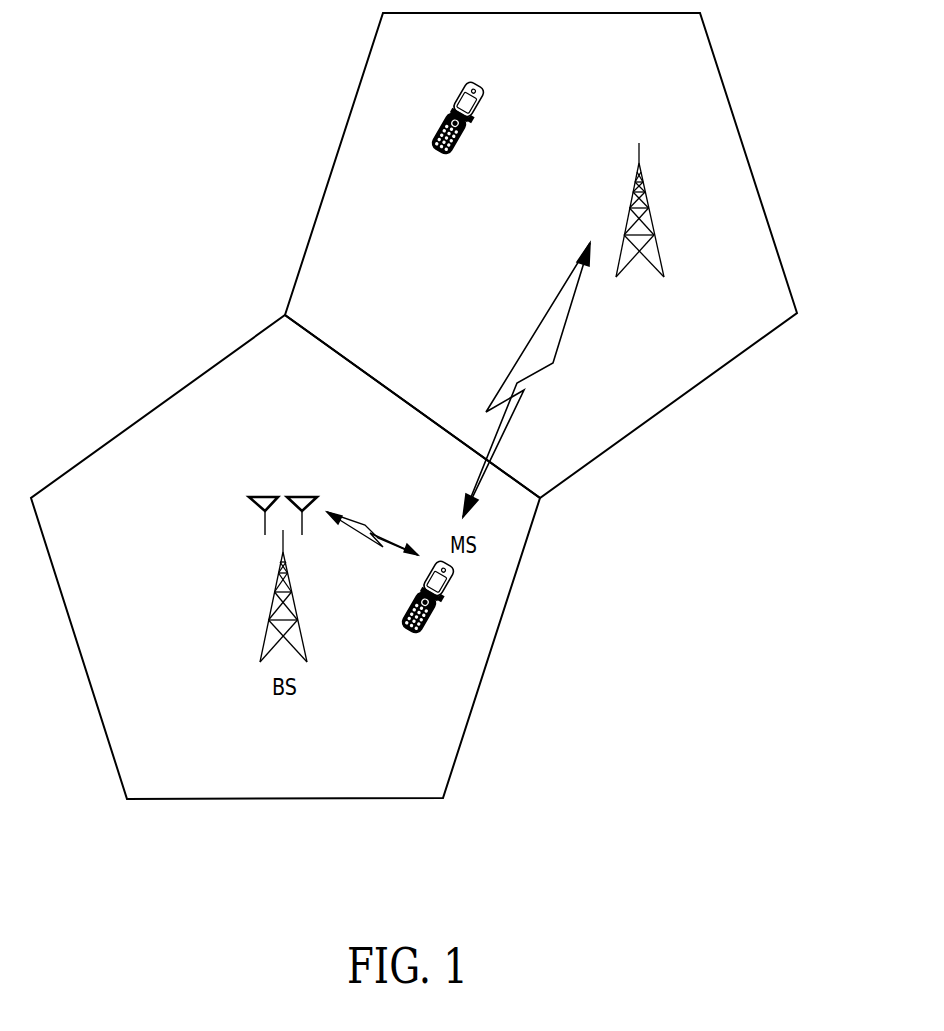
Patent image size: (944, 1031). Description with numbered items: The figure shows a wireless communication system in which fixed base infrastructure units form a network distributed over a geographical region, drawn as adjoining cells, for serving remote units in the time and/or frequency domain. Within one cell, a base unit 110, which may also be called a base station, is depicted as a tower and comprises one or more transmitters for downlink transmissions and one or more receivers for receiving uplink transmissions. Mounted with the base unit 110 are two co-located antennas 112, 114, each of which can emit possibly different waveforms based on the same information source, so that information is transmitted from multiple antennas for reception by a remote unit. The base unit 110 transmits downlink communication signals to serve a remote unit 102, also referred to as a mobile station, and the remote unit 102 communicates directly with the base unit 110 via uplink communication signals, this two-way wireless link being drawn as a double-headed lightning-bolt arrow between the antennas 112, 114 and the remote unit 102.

The remote unit 102 is at (413, 633).
The base unit 110 is at (272, 601).
The antenna 112 is at (248, 498).
The antenna 114 is at (302, 496).